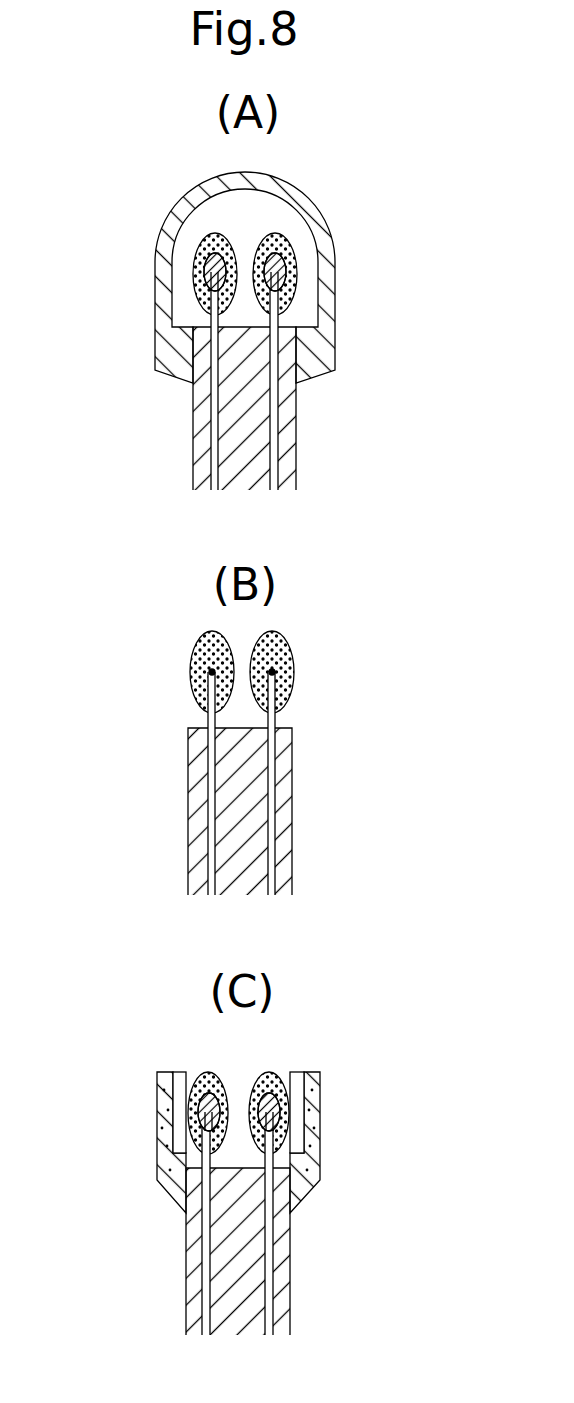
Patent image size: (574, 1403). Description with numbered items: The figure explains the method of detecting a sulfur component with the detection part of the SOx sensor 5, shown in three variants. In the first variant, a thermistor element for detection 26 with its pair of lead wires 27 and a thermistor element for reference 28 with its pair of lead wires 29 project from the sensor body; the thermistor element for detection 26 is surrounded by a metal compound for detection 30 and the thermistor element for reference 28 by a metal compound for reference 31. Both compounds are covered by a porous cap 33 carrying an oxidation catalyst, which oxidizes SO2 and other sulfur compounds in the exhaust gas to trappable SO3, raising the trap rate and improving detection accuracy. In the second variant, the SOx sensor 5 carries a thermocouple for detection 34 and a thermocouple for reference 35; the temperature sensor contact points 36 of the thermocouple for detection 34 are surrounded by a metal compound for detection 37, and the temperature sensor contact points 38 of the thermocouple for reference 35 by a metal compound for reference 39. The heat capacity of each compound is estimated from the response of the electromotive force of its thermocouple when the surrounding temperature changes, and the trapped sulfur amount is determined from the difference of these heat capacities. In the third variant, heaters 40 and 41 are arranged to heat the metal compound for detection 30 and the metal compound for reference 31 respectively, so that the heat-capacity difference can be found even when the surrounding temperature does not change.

The SOx sensor 5 is at (194, 457).
The thermistor element for detection 26 is at (204, 265).
The lead wires 27 is at (210, 420).
The thermistor element for reference 28 is at (286, 265).
The lead wires 29 is at (277, 420).
The metal compound for detection 30 is at (207, 240).
The metal compound for reference 31 is at (283, 237).
The porous cap 33 is at (193, 192).
The thermocouple for detection 34 is at (208, 760).
The thermocouple for reference 35 is at (275, 758).
The temperature sensor contact points 36 is at (203, 667).
The metal compound for detection 37 is at (200, 648).
The temperature sensor contact points 38 is at (280, 668).
The metal compound for reference 39 is at (280, 647).
The heater 40 is at (162, 1128).
The heater 41 is at (317, 1128).